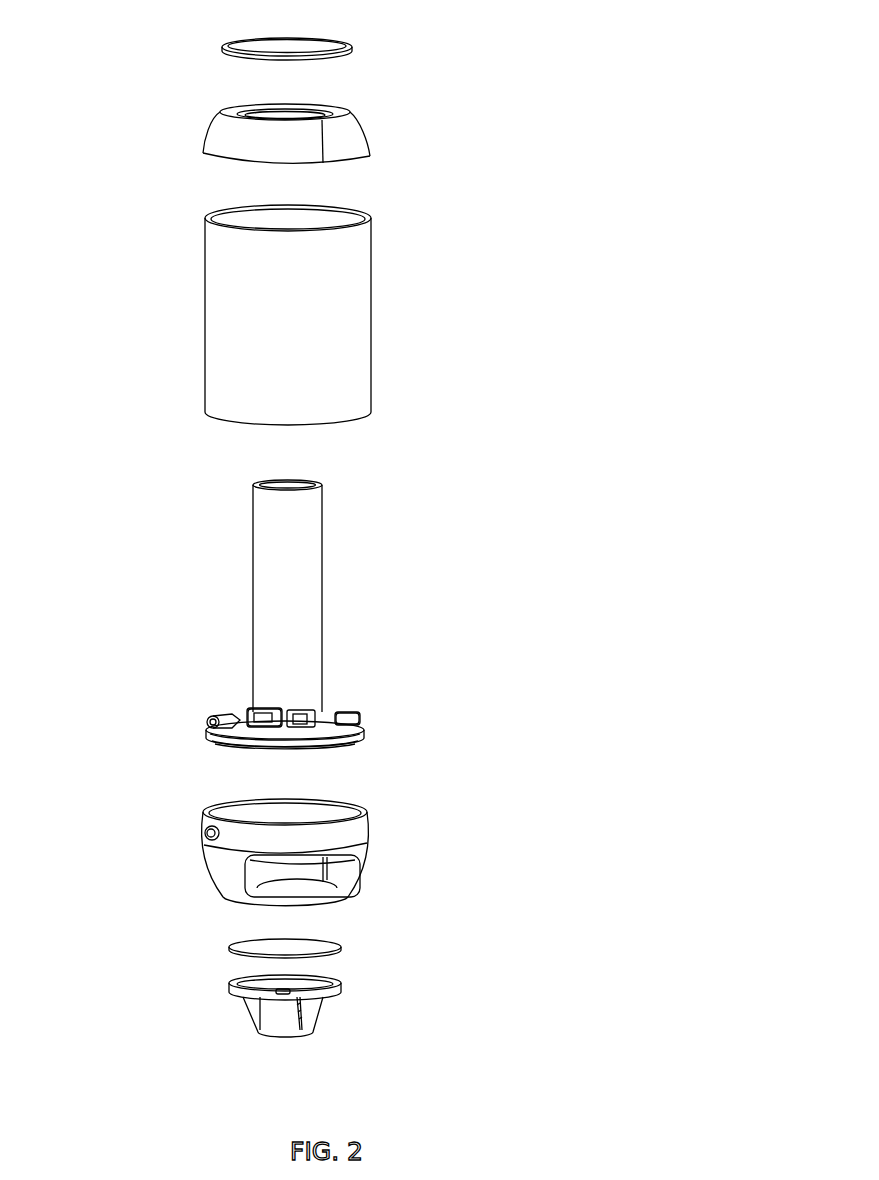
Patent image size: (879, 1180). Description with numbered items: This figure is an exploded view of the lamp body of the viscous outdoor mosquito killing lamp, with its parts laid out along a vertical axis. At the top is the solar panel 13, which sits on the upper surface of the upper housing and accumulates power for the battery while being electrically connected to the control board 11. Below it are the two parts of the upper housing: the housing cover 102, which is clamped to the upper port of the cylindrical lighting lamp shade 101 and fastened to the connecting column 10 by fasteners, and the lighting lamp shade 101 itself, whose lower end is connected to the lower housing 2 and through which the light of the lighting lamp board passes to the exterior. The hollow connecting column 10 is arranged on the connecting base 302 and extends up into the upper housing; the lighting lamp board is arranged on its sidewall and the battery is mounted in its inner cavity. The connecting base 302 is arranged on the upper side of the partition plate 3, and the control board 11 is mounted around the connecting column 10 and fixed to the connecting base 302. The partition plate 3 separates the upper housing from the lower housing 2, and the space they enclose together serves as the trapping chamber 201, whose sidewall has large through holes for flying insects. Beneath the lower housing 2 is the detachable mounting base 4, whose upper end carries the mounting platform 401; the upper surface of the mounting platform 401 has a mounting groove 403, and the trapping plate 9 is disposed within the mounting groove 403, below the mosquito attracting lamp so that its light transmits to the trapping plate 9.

The solar panel 13 is at (313, 50).
The housing cover 102 is at (360, 140).
The cylindrical lighting lamp shade 101 is at (353, 307).
The connecting column 10 is at (307, 592).
The connecting base 302 is at (247, 710).
The control board 11 is at (343, 713).
The partition plate 3 is at (306, 700).
The lower housing 2 is at (403, 878).
The trapping chamber 201 is at (340, 867).
The trapping plate 9 is at (260, 947).
The mounting platform 401 is at (340, 990).
The mounting groove 403 is at (240, 998).
The mounting base 4 is at (295, 1010).